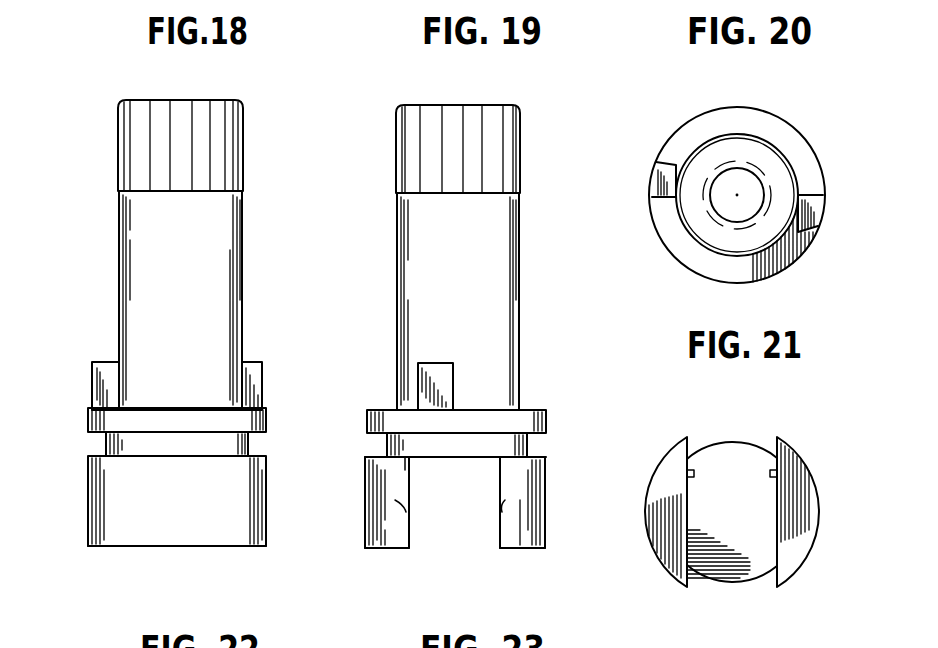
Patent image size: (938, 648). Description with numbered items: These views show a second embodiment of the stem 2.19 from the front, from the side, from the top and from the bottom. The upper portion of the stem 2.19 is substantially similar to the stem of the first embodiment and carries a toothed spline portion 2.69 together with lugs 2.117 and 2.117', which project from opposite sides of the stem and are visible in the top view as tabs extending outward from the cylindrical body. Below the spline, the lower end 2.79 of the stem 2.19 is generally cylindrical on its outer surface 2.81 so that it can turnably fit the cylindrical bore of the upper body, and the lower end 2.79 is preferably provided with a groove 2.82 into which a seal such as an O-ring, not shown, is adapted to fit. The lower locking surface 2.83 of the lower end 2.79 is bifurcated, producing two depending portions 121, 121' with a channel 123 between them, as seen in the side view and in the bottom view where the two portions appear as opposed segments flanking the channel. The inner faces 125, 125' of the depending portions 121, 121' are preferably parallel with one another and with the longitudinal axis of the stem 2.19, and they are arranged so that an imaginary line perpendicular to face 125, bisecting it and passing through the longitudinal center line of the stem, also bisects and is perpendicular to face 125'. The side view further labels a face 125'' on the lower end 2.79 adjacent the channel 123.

In FIG. 18, the toothed spline portion 2.69 is at (212, 147).
In FIG. 19, the toothed spline portion 2.69 is at (500, 148).
In FIG. 18, the stem 2.19 is at (253, 252).
In FIG. 19, the stem 2.19 is at (527, 263).
In FIG. 20, the stem 2.19 is at (737, 195).
In FIG. 18, the lug 2.117 is at (69, 362).
In FIG. 19, the lug 2.117 is at (447, 357).
In FIG. 20, the lug 2.117 is at (649, 145).
In FIG. 18, the lug 2.117' is at (287, 367).
In FIG. 20, the lug 2.117' is at (845, 213).
In FIG. 18, the groove 2.82 is at (262, 443).
In FIG. 19, the groove 2.82 is at (456, 433).
In FIG. 18, the outer surface 2.81 is at (188, 503).
In FIG. 18, the lower end 2.79 is at (212, 537).
In FIG. 19, the lower locking surface 2.83 is at (540, 553).
In FIG. 21, the lower locking surface 2.83 is at (880, 580).
In FIG. 19, the depending portion 121 is at (387, 527).
In FIG. 21, the depending portion 121 is at (653, 511).
In FIG. 19, the depending portion 121' is at (517, 525).
In FIG. 21, the depending portion 121' is at (821, 502).
In FIG. 19, the channel 123 is at (450, 525).
In FIG. 21, the channel 123 is at (710, 587).
In FIG. 19, the inner face 125 is at (360, 499).
In FIG. 21, the inner face 125 is at (708, 433).
In FIG. 19, the inner face 125' is at (550, 499).
In FIG. 21, the inner face 125' is at (778, 433).
In FIG. 19, the groove 125'' is at (438, 481).